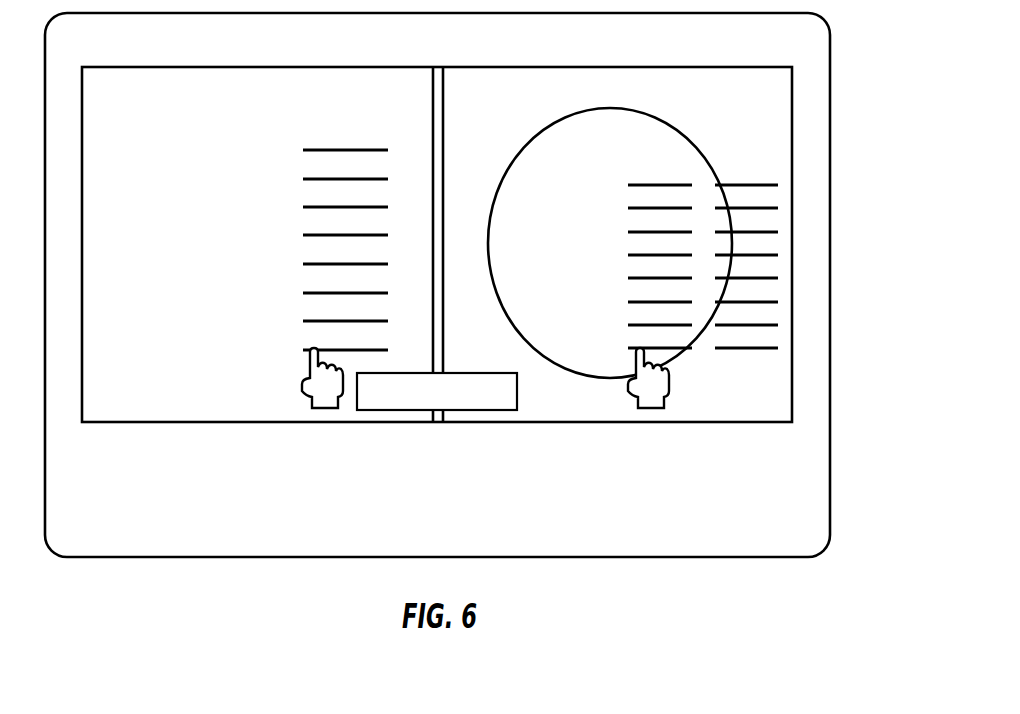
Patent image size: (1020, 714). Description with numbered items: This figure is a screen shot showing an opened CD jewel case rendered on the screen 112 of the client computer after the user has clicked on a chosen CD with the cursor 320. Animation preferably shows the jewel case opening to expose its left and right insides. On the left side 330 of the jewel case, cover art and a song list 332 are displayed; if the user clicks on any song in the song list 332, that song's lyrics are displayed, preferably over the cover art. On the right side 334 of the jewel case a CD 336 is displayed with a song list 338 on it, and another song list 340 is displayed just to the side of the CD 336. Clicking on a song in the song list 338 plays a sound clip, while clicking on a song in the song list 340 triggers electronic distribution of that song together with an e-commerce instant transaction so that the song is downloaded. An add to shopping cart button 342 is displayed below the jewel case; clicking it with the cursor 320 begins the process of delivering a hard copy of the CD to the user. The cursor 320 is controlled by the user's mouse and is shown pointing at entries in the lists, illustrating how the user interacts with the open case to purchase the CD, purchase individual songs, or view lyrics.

The screen 112 is at (832, 97).
The left side of the jewel case 330 is at (192, 67).
The song list 332 is at (345, 150).
The right side of the jewel case 334 is at (793, 153).
The CD 336 is at (532, 138).
The song list 338 is at (633, 208).
The song list 340 is at (758, 207).
The add to shopping cart button 342 is at (385, 410).
The cursor 320 is at (304, 383).